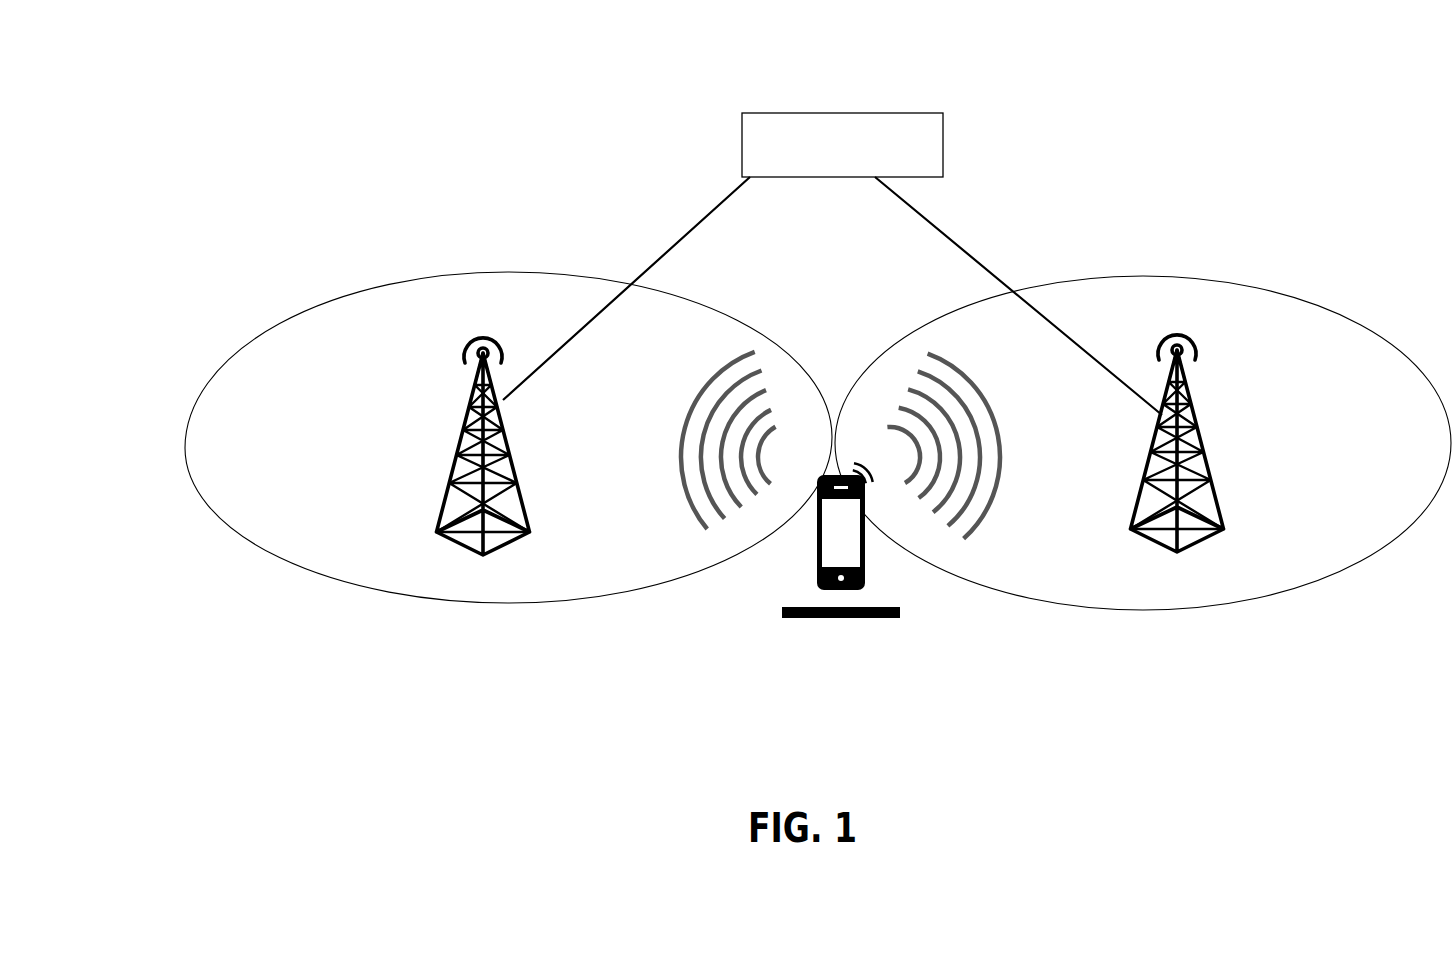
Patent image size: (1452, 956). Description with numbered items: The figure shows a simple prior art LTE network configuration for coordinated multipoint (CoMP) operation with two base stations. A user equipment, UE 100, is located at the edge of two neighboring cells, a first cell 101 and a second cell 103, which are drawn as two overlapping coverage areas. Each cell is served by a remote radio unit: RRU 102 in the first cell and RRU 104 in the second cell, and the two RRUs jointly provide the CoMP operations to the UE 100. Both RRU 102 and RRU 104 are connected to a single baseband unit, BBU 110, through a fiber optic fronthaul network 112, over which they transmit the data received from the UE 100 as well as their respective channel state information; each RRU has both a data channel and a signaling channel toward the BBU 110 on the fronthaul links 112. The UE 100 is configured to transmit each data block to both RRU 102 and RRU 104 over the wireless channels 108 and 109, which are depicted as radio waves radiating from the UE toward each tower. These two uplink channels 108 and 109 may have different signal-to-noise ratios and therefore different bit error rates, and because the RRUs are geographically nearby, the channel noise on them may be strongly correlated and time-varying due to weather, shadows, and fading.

The UE 100 is at (822, 550).
The Cell 0 101 is at (207, 493).
The RRU 102 is at (457, 458).
The Cell 1 103 is at (1253, 283).
The RRU 104 is at (1202, 438).
The wireless channel 108 is at (677, 473).
The wireless channel 109 is at (988, 502).
The BBU 110 is at (782, 113).
The fiber optic fronthaul network 112 is at (717, 212).